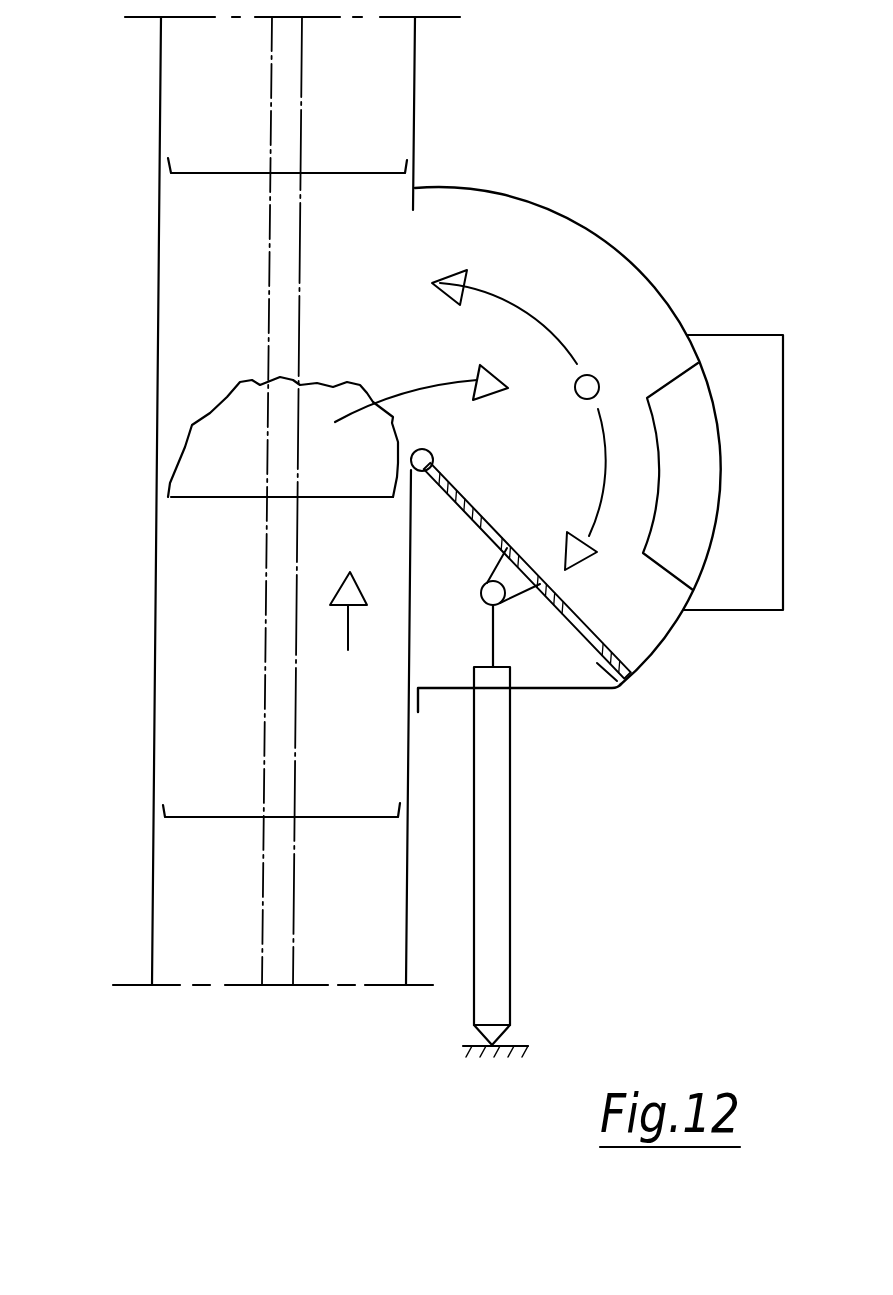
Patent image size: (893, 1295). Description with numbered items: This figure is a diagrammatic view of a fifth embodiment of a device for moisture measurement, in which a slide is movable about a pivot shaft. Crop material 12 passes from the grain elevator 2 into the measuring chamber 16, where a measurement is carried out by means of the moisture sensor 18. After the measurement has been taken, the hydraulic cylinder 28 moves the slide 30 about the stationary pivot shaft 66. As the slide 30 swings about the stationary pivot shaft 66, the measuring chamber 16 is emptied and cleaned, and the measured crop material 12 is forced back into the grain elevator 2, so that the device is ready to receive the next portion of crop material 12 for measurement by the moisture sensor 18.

The grain elevator 2 is at (262, 1047).
The crop material 12 is at (215, 452).
The measuring chamber 16 is at (536, 470).
The moisture sensor 18 is at (678, 417).
The hydraulic cylinder 28 is at (500, 840).
The slide 30 is at (637, 670).
The stationary pivot shaft 66 is at (393, 497).